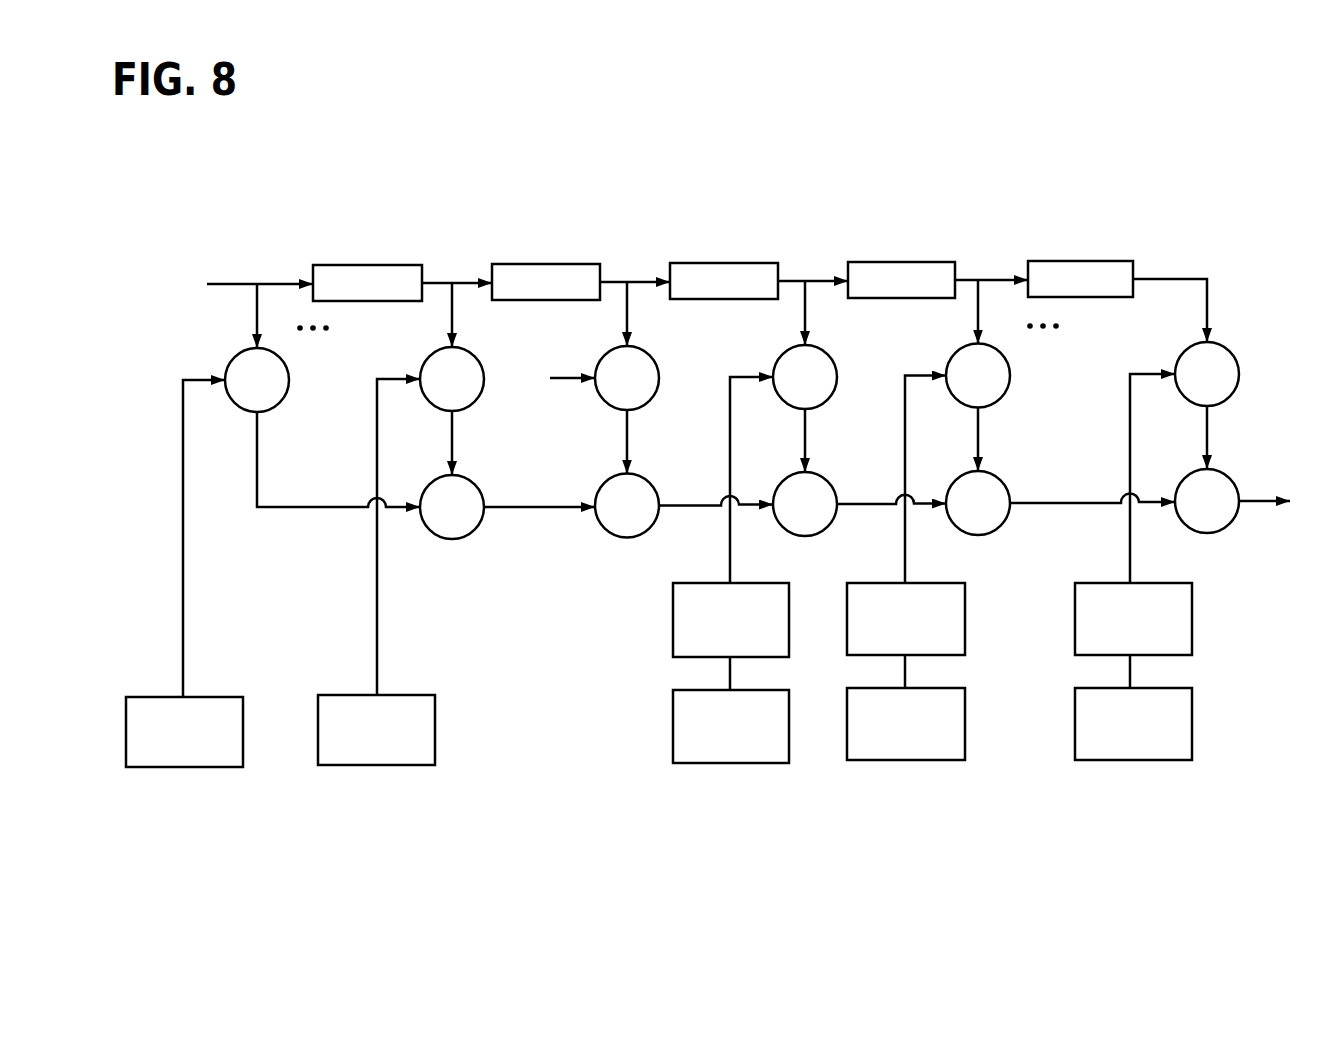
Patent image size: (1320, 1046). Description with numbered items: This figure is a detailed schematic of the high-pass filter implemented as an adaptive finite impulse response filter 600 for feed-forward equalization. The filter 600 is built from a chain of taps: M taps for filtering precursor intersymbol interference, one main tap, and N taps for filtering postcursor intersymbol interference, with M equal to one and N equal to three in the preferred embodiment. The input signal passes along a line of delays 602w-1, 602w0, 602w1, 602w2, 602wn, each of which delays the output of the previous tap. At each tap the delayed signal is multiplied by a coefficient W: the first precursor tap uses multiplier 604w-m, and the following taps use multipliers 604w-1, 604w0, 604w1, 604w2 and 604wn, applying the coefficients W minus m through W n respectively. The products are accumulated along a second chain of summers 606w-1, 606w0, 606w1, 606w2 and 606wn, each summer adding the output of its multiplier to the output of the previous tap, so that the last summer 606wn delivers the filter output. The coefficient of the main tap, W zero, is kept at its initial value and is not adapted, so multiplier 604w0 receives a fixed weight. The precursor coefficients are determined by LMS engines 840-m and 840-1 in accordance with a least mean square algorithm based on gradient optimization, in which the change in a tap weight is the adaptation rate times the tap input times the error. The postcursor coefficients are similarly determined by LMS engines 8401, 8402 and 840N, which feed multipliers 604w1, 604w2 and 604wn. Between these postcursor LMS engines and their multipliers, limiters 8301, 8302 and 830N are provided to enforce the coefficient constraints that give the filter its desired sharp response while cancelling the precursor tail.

The finite impulse response filter 600 is at (280, 194).
The delay 602w-1 is at (366, 265).
The delay 602w0 is at (540, 264).
The delay 602w1 is at (720, 263).
The delay 602w2 is at (892, 262).
The delay 602wn is at (1077, 261).
The multiplier 604w-m is at (289, 381).
The multiplier 604w-1 is at (484, 380).
The multiplier 604w0 is at (659, 379).
The multiplier 604w1 is at (837, 378).
The multiplier 604w2 is at (1010, 376).
The multiplier 604wn is at (1239, 375).
The summer 606w-1 is at (479, 530).
The summer 606w0 is at (654, 529).
The summer 606w1 is at (832, 527).
The summer 606w2 is at (1005, 526).
The summer 606wn is at (1234, 524).
The limiter 8301 is at (789, 617).
The limiter 8302 is at (965, 617).
The limiter 830N is at (1192, 617).
The LMS engine 840-m is at (198, 767).
The LMS engine 840-1 is at (390, 765).
The LMS engine 8401 is at (730, 763).
The LMS engine 8402 is at (915, 760).
The LMS engine 840N is at (1140, 760).